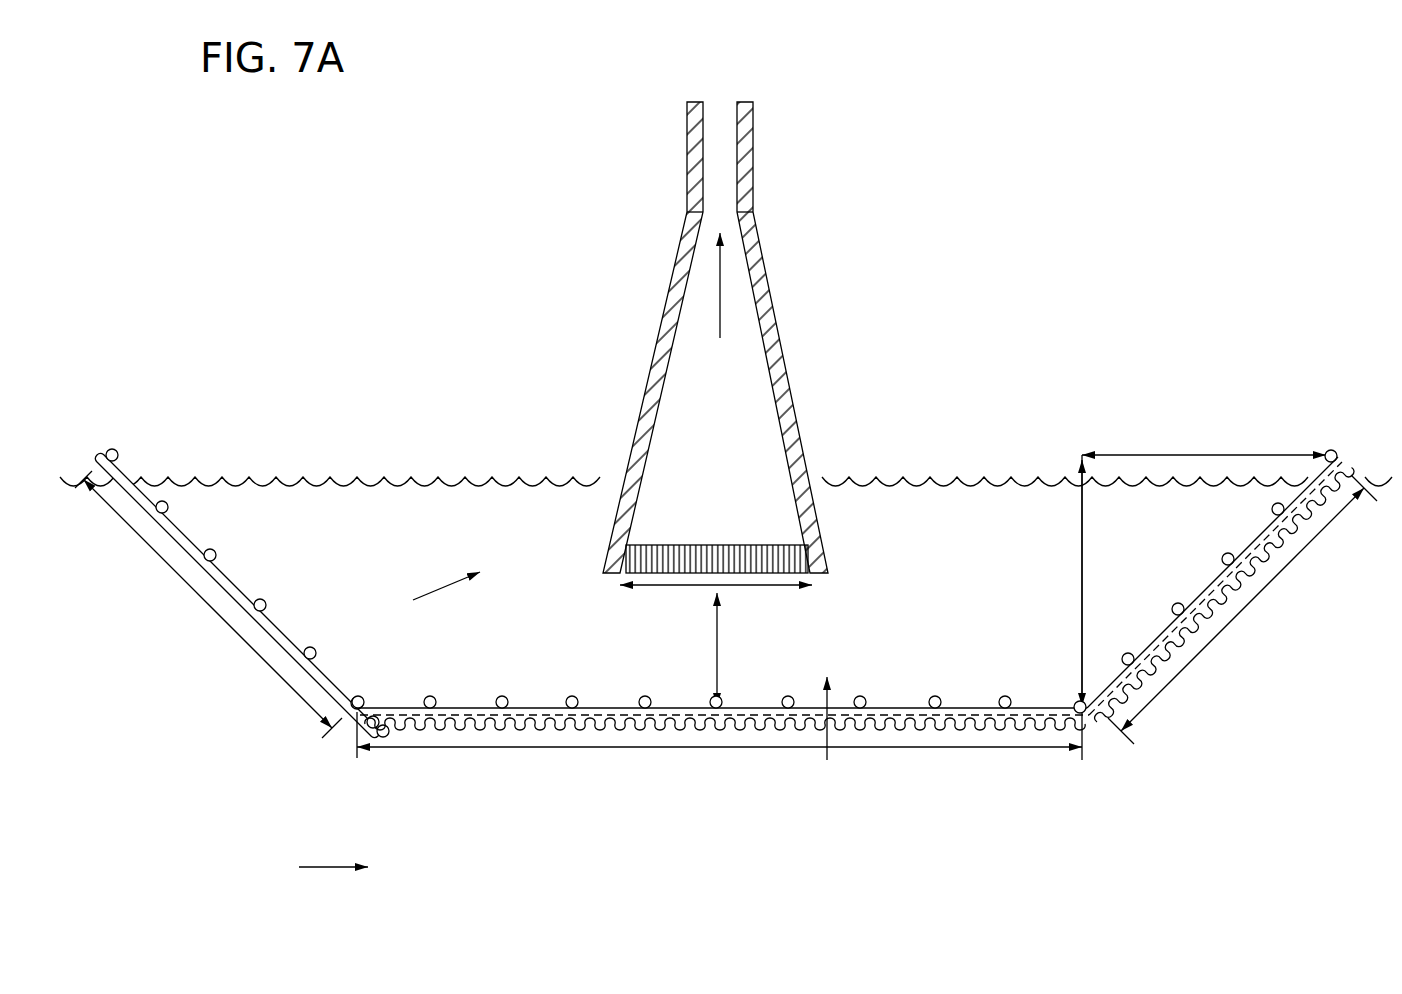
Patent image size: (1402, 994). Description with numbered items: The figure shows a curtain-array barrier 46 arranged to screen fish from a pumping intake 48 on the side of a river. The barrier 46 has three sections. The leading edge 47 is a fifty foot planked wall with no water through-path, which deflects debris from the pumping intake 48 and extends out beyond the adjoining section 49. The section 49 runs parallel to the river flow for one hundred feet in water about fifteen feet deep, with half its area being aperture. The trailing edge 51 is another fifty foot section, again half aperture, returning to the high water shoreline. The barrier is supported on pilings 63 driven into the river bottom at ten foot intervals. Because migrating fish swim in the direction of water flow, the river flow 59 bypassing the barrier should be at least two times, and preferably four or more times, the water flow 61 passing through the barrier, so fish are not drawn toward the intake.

The barrier 46 is at (840, 607).
The leading edge 47 is at (236, 583).
The pumping intake 48 is at (722, 160).
The section parallel to the river flow 49 is at (532, 704).
The trailing edge 51 is at (1152, 640).
The river flow 59 is at (328, 868).
The water flow through the barrier 61 is at (876, 683).
The pilings 63 is at (430, 697).